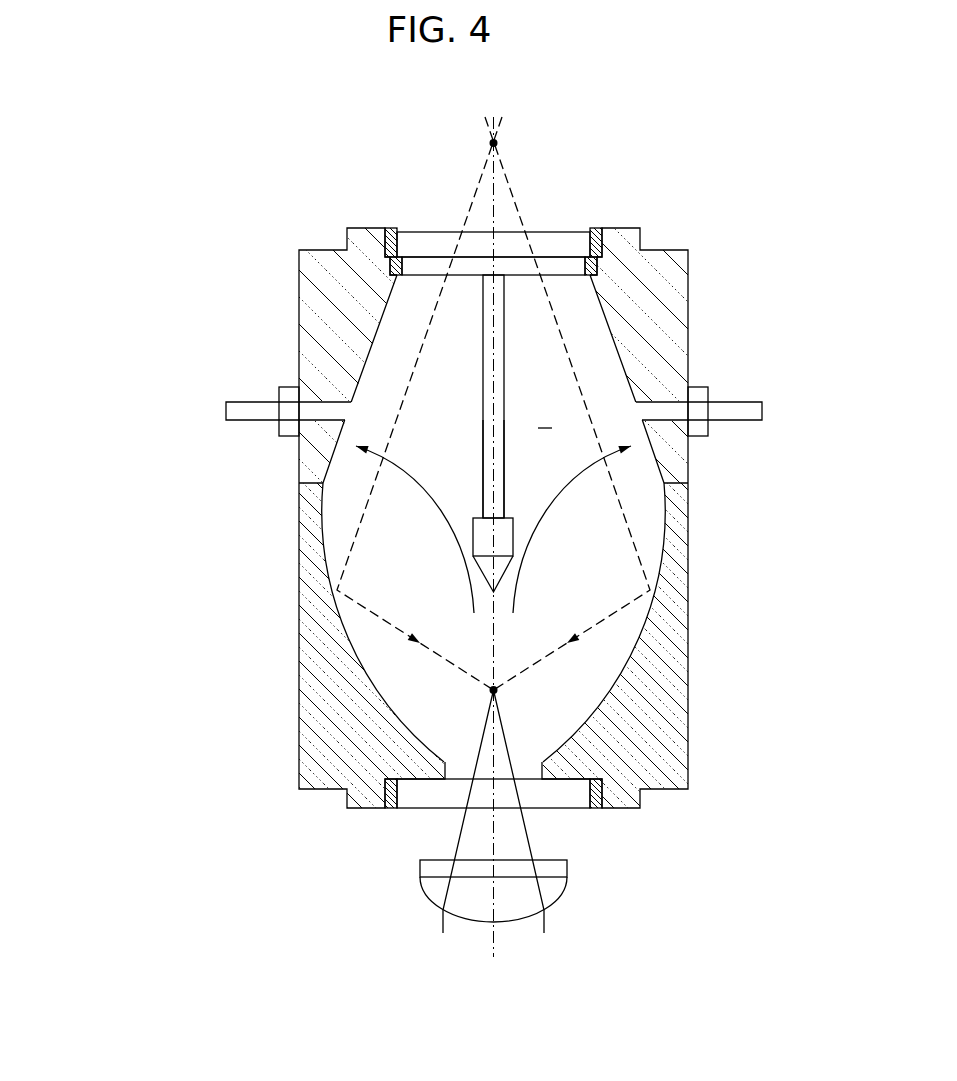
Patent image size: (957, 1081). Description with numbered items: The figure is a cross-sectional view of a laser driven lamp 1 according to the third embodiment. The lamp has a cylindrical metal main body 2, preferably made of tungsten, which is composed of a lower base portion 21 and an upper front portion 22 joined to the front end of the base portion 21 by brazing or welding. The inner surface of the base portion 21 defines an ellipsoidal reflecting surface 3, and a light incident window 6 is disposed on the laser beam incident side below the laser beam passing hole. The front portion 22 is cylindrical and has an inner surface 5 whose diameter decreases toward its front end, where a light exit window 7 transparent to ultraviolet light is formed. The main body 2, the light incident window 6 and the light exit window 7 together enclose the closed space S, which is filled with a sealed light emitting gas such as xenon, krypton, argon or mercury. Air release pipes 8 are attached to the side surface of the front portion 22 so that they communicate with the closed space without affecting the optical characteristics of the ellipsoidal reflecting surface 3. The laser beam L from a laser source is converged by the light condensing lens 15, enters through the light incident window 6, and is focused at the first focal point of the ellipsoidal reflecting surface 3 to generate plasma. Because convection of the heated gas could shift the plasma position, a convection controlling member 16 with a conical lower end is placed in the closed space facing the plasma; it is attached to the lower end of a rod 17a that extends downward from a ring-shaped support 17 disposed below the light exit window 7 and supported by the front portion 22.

The laser driven lamp 1 is at (318, 145).
The main body 2 is at (197, 465).
The base portion 21 is at (306, 537).
The front portion 22 is at (303, 458).
The ellipsoidal reflecting surface 3 is at (380, 698).
The inner surface 5 is at (368, 362).
The light incident window 6 is at (568, 795).
The light exit window 7 is at (552, 232).
The air release pipes 8 is at (255, 400).
The light condensing lens 15 is at (430, 905).
The convection controlling member 16 is at (505, 535).
The ring-shaped support 17 is at (540, 277).
The rod 17a is at (482, 432).